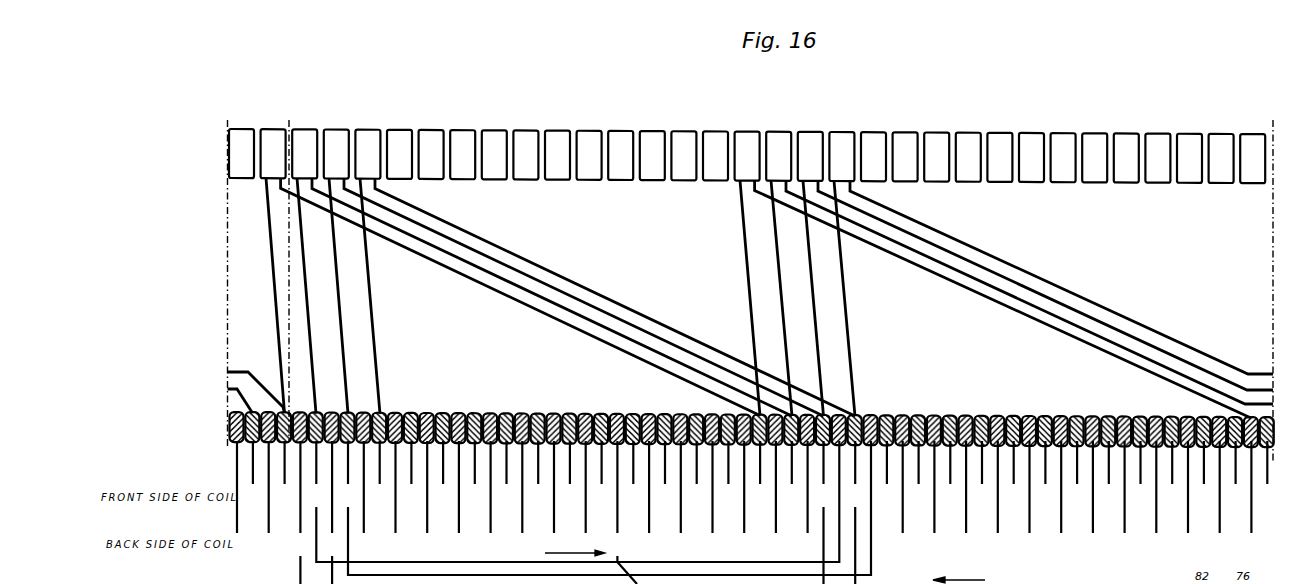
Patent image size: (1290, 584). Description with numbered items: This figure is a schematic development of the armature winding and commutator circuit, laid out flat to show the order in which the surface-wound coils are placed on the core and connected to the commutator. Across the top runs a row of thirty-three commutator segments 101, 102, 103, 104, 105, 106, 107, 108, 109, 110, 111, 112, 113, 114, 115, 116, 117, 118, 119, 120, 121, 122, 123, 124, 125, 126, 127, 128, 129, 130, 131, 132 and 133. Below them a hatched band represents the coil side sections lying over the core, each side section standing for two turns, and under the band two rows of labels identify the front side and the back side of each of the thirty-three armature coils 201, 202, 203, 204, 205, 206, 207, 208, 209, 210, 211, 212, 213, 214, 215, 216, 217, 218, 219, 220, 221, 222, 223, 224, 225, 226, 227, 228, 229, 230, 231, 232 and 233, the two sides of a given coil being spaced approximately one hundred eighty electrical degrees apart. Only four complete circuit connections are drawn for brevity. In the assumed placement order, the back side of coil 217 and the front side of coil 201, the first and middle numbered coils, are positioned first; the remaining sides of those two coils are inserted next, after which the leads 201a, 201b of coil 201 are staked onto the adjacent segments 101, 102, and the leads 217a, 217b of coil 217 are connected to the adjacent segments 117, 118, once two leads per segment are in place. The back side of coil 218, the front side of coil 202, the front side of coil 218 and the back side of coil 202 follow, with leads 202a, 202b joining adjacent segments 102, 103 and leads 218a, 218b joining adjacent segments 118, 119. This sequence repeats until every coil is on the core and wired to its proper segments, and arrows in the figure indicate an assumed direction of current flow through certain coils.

The commutator segment 101 is at (273, 153).
The commutator segment 102 is at (304, 153).
The commutator segment 103 is at (336, 153).
The commutator segment 104 is at (367, 154).
The commutator segment 105 is at (399, 154).
The commutator segment 106 is at (431, 154).
The commutator segment 107 is at (462, 154).
The commutator segment 108 is at (494, 154).
The commutator segment 109 is at (525, 154).
The commutator segment 110 is at (557, 155).
The commutator segment 111 is at (589, 155).
The commutator segment 112 is at (620, 155).
The commutator segment 113 is at (652, 155).
The commutator segment 114 is at (683, 155).
The commutator segment 115 is at (715, 155).
The commutator segment 116 is at (747, 156).
The commutator segment 117 is at (778, 156).
The commutator segment 118 is at (810, 156).
The commutator segment 119 is at (841, 156).
The commutator segment 120 is at (873, 156).
The commutator segment 121 is at (905, 156).
The commutator segment 122 is at (936, 156).
The commutator segment 123 is at (968, 157).
The commutator segment 124 is at (999, 157).
The commutator segment 125 is at (1031, 157).
The commutator segment 126 is at (1063, 157).
The commutator segment 127 is at (1094, 157).
The commutator segment 128 is at (1126, 157).
The commutator segment 129 is at (1157, 158).
The commutator segment 130 is at (1189, 158).
The commutator segment 131 is at (1221, 158).
The commutator segment 132 is at (1252, 158).
The commutator segment 133 is at (241, 153).
The armature coil 201 is at (546, 495).
The armature coil 202 is at (581, 501).
The armature coil 203 is at (612, 508).
The armature coil 204 is at (641, 495).
The armature coil 205 is at (673, 495).
The armature coil 206 is at (705, 495).
The armature coil 207 is at (736, 495).
The armature coil 208 is at (768, 495).
The armature coil 209 is at (800, 495).
The armature coil 210 is at (831, 495).
The armature coil 211 is at (863, 495).
The armature coil 212 is at (895, 495).
The armature coil 213 is at (926, 495).
The armature coil 214 is at (958, 495).
The armature coil 215 is at (990, 495).
The armature coil 216 is at (498, 495).
The armature coil 217 is at (530, 495).
The armature coil 218 is at (562, 512).
The armature coil 219 is at (594, 512).
The armature coil 220 is at (625, 495).
The armature coil 221 is at (657, 495).
The armature coil 222 is at (689, 495).
The armature coil 223 is at (720, 495).
The armature coil 224 is at (752, 495).
The armature coil 225 is at (784, 495).
The armature coil 226 is at (815, 495).
The armature coil 227 is at (847, 495).
The armature coil 228 is at (879, 512).
The armature coil 229 is at (911, 495).
The armature coil 230 is at (942, 495).
The armature coil 231 is at (974, 495).
The armature coil 232 is at (1006, 495).
The armature coil 233 is at (514, 495).
The coil lead 201a is at (279, 346).
The coil lead 201b is at (556, 304).
The coil lead 202a is at (311, 349).
The coil lead 202b is at (512, 264).
The coil lead 217a is at (778, 306).
The coil lead 217b is at (1108, 321).
The coil lead 218a is at (820, 333).
The coil lead 218b is at (1080, 296).